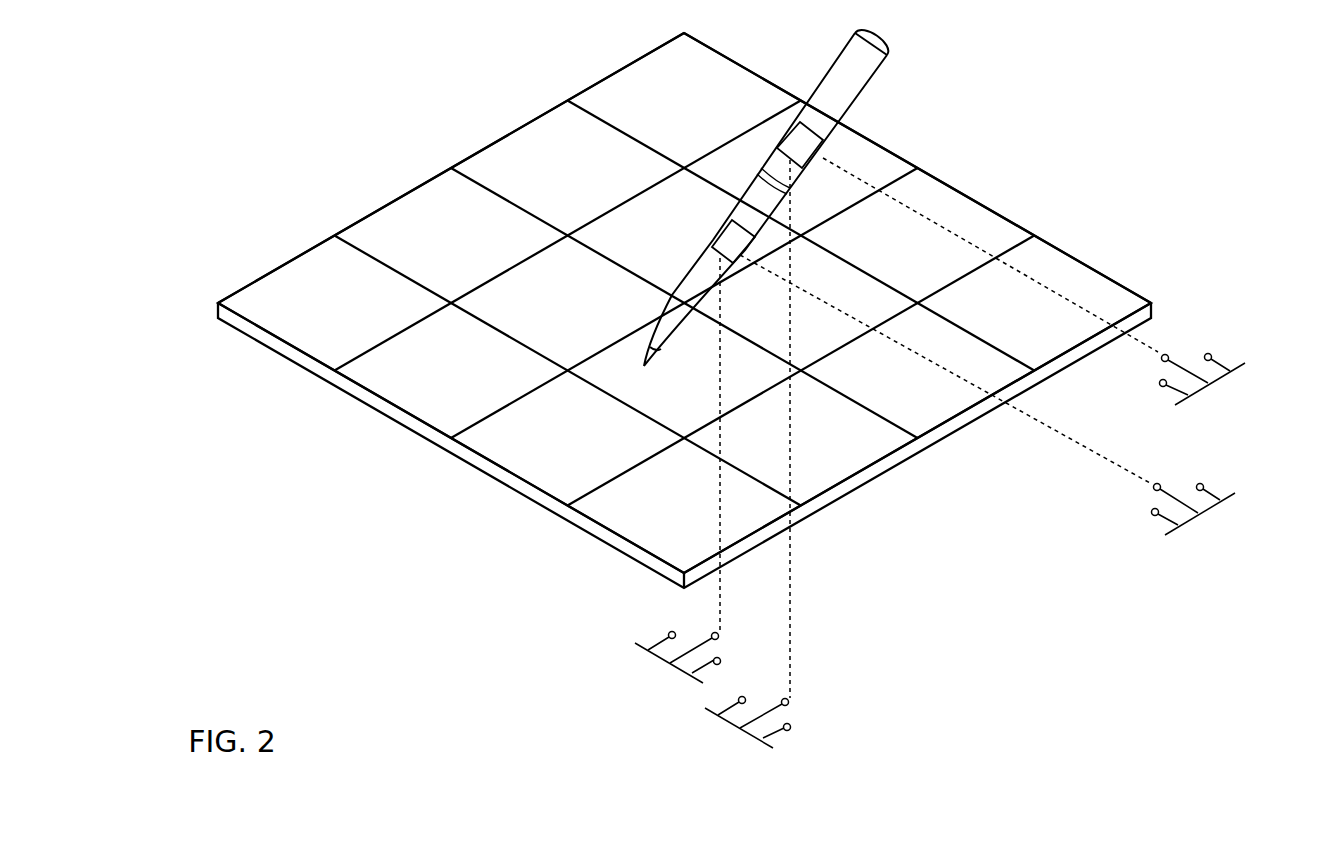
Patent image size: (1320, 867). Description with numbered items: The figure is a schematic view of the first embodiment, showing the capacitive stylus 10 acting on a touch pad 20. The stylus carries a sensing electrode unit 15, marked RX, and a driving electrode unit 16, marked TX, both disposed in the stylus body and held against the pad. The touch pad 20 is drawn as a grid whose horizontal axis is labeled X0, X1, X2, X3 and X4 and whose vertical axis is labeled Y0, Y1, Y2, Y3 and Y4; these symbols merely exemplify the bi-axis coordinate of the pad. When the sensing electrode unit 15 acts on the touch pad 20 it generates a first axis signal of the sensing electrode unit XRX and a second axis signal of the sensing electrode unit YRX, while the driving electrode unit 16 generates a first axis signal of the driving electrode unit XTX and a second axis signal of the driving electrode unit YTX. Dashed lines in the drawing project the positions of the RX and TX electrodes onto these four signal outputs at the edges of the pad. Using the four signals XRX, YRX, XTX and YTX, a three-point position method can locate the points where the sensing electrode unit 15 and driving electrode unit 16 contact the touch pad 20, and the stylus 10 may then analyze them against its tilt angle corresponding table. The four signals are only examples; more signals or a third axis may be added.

The capacitive stylus 10 is at (867, 75).
The sensing electrode unit 15 is at (782, 133).
The driving electrode unit 16 is at (718, 221).
The touch pad 20 is at (720, 72).
The horizontal axis label X0 is at (433, 190).
The horizontal axis label X1 is at (550, 259).
The horizontal axis label X2 is at (666, 326).
The horizontal axis label X3 is at (783, 394).
The horizontal axis label X4 is at (900, 461).
The vertical axis label Y0 is at (436, 426).
The vertical axis label Y1 is at (552, 358).
The vertical axis label Y2 is at (670, 290).
The vertical axis label Y3 is at (786, 223).
The vertical axis label Y4 is at (902, 155).
The first axis signal of the driving electrode unit XTX is at (660, 662).
The first axis signal of the sensing electrode unit XRX is at (791, 727).
The second axis signal of the driving electrode unit YTX is at (1215, 490).
The second axis signal of the sensing electrode unit YRX is at (1225, 362).